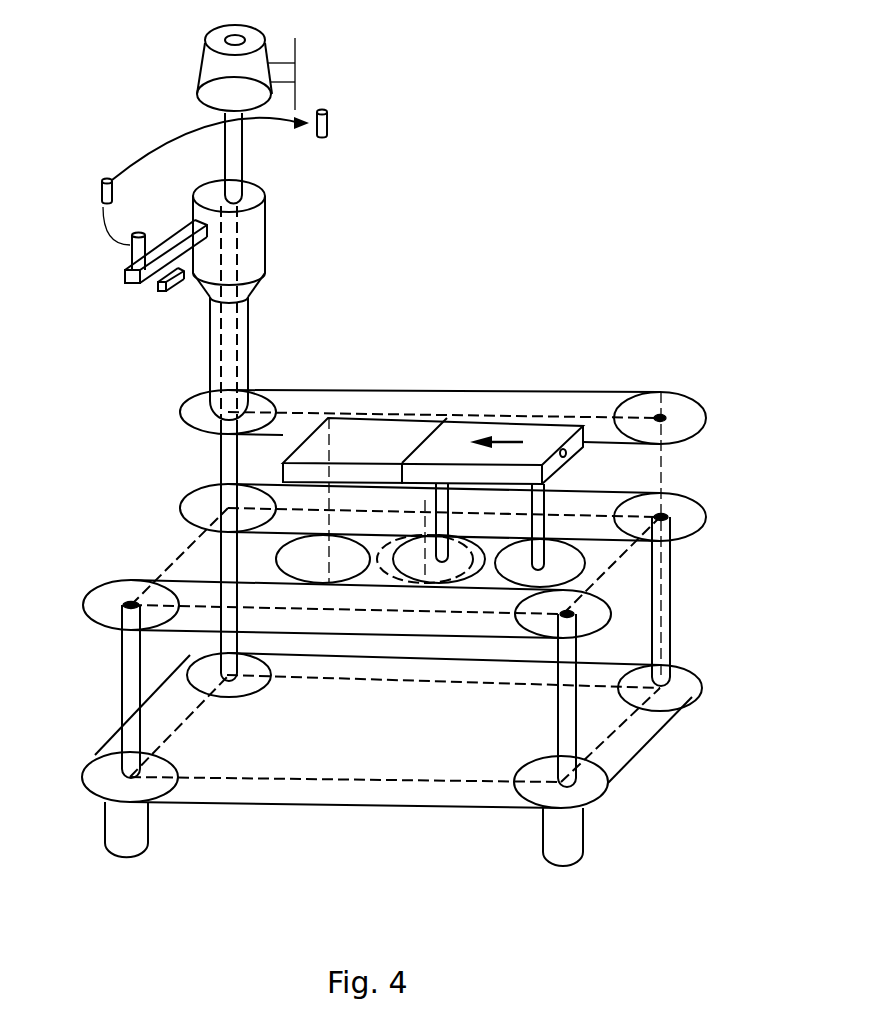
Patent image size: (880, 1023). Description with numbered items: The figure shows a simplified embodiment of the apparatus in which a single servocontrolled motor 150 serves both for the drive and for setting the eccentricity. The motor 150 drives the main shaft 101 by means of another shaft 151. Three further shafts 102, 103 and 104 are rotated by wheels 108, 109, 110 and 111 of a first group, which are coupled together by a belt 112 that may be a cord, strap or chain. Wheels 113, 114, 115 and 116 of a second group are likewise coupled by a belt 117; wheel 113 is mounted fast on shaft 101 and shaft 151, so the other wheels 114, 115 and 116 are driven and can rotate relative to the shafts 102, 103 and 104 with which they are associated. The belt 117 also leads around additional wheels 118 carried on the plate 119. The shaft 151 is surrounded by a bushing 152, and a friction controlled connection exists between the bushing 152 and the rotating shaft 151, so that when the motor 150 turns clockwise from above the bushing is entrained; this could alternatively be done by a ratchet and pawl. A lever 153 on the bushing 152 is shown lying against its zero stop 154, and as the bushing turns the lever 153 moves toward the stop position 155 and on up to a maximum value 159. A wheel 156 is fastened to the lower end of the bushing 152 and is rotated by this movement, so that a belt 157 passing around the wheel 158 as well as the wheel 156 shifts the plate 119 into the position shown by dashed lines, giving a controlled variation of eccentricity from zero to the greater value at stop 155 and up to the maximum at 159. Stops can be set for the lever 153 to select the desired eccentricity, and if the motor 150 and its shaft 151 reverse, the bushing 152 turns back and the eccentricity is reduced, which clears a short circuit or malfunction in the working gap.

The shaft 101 is at (227, 560).
The shaft 102 is at (663, 570).
The shaft 103 is at (567, 738).
The shaft 104 is at (127, 695).
The wheel of the first group 108 is at (233, 688).
The wheel of the first group 109 is at (672, 693).
The wheel of the first group 110 is at (535, 775).
The wheel of the first group 111 is at (155, 770).
The belt 112 is at (445, 657).
The wheel of the second group 113 is at (202, 505).
The wheel of the second group 114 is at (682, 513).
The wheel of the second group 115 is at (588, 622).
The wheel of the second group 116 is at (108, 600).
The belt 117 is at (393, 635).
The additional wheels 118 is at (510, 565).
The plate 119 is at (468, 432).
The servocontrolled motor 150 is at (252, 70).
The shaft 151 is at (232, 157).
The bushing 152 is at (250, 232).
The lever 153 is at (130, 277).
The zero stop 154 is at (163, 287).
The stop position 155 is at (107, 193).
The wheel 156 is at (258, 400).
The belt 157 is at (365, 390).
The wheel 158 is at (640, 407).
The maximum value position 159 is at (324, 140).